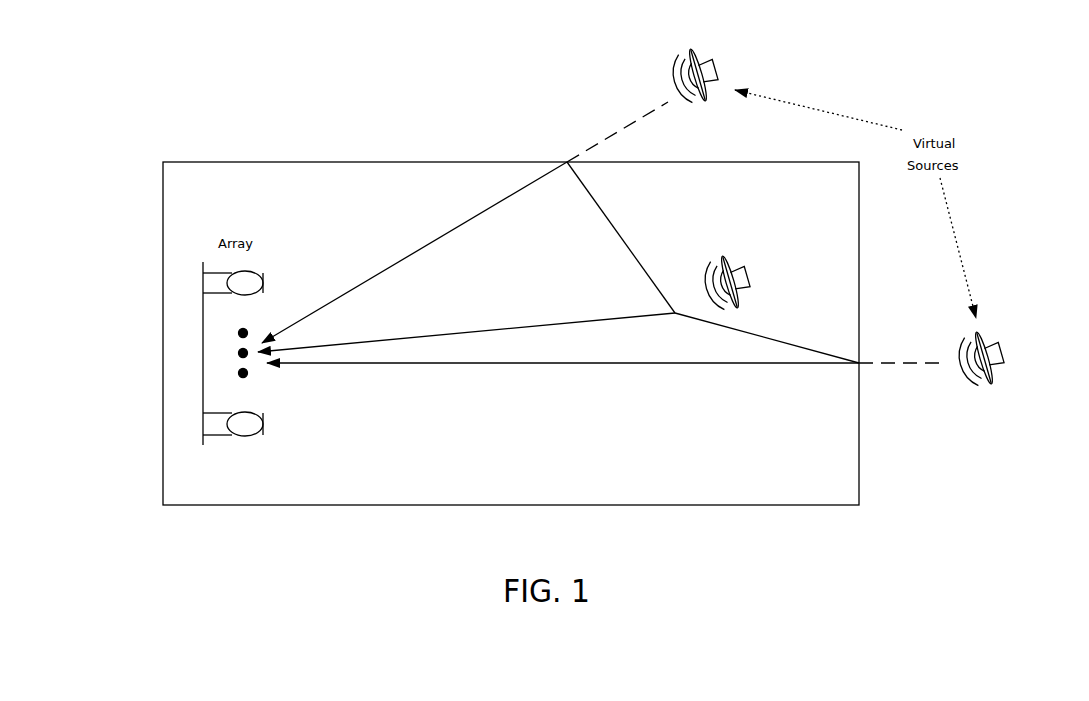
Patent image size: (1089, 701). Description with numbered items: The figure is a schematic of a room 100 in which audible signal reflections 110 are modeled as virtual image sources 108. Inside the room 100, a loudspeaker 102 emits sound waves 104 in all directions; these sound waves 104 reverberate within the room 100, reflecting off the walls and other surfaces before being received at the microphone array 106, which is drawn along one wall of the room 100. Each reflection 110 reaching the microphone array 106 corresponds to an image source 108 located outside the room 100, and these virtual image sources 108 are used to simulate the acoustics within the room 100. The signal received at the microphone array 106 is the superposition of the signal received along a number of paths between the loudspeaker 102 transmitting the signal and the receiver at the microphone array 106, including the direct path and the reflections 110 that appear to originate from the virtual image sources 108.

The room 100 is at (790, 505).
The loudspeaker 102 is at (752, 275).
The sound waves 104 is at (610, 218).
The microphone array 106 is at (262, 278).
The virtual image sources 108 is at (708, 62).
The audible signal reflections 110 is at (422, 245).